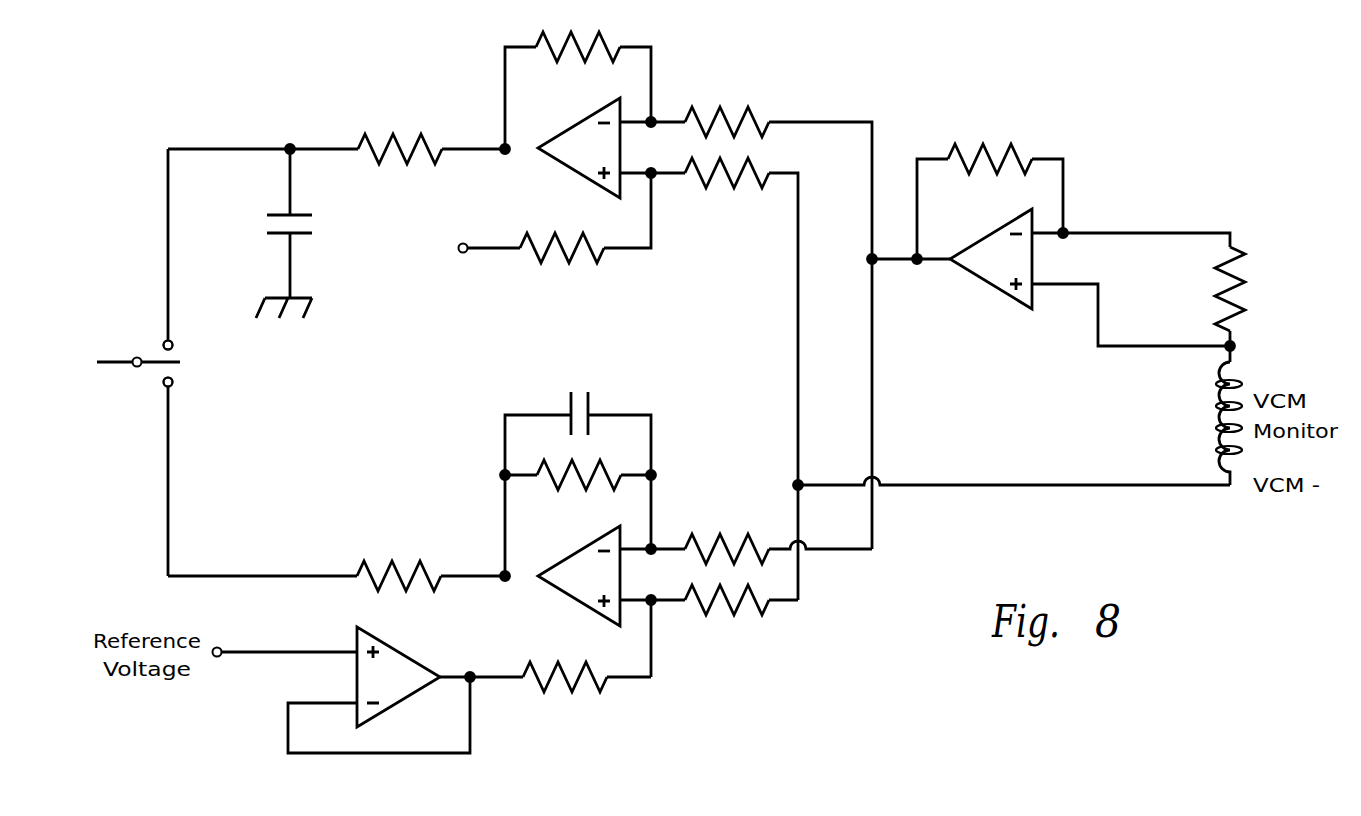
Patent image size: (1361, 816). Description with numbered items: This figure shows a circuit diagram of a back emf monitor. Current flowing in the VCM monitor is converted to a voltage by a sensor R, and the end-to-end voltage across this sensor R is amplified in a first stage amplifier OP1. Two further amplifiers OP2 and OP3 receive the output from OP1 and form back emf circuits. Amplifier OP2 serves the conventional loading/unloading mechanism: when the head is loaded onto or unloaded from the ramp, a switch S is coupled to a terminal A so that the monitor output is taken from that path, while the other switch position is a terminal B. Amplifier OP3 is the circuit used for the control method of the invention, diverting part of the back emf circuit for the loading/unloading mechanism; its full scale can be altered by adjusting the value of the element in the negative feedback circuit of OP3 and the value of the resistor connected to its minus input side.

The first stage amplifier OP1 is at (1110, 253).
The amplifier OP2 is at (520, 316).
The amplifier OP3 is at (520, 534).
The switch S is at (118, 362).
The terminal A is at (182, 340).
The switch terminal B is at (181, 390).